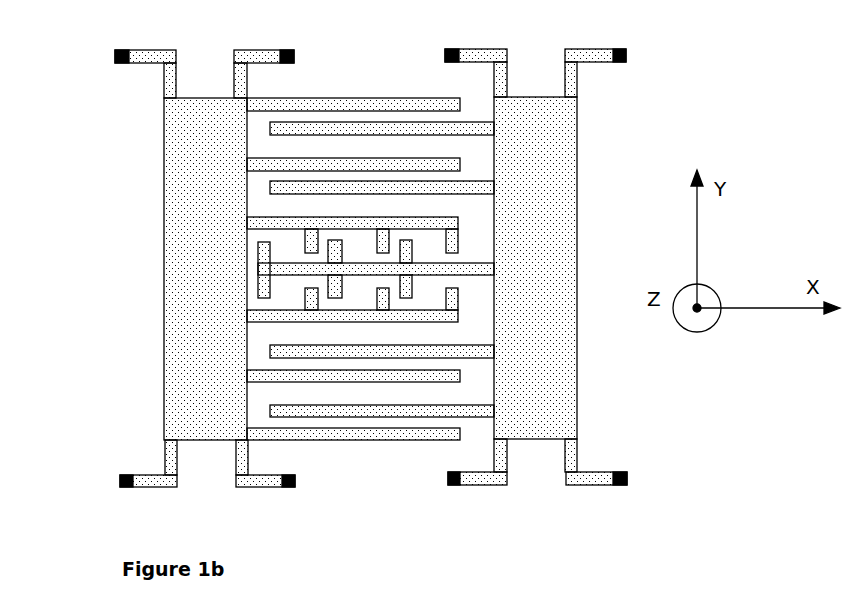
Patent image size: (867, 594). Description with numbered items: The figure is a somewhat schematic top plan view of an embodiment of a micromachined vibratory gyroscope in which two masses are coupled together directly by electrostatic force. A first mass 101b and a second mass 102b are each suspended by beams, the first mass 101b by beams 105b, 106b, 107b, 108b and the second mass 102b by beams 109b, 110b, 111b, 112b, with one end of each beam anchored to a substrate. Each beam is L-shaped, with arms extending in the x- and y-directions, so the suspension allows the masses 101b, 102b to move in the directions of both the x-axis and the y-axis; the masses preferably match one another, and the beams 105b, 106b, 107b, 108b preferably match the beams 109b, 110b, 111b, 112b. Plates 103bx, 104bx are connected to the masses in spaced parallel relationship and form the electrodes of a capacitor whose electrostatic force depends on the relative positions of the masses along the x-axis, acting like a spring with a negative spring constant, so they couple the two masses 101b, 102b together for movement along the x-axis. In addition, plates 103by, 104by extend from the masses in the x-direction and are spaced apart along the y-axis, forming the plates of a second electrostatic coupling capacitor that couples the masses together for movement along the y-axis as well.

The mass 101b is at (198, 265).
The mass 102b is at (540, 264).
The plate 103bx is at (328, 253).
The plate 103by is at (380, 417).
The plate 104bx is at (305, 289).
The plate 104by is at (307, 440).
The beam 105b is at (165, 50).
The beam 106b is at (272, 50).
The beam 107b is at (153, 487).
The beam 108b is at (253, 487).
The beam 109b is at (493, 49).
The beam 110b is at (602, 49).
The beam 111b is at (482, 485).
The beam 112b is at (590, 485).